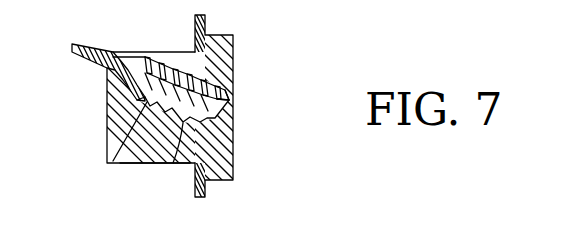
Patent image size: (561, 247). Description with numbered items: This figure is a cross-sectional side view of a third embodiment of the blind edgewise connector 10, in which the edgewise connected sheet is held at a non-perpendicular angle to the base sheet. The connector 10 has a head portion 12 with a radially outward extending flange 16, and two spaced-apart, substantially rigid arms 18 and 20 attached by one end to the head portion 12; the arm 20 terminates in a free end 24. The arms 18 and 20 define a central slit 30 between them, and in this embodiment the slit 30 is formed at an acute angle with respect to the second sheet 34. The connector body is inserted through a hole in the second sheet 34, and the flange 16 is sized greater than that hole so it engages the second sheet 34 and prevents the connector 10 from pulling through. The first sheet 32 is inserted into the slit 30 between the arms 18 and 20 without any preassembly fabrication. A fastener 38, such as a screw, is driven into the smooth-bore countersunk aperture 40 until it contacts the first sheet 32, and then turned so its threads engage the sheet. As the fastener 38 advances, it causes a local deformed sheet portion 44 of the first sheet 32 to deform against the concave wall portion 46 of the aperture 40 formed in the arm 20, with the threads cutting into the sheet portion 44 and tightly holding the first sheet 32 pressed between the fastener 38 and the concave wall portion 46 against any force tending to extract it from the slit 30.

The edgewise connector 10 is at (80, 118).
The head portion 12 is at (216, 107).
The flange 16 is at (233, 38).
The arm 18 is at (205, 66).
The arm 20 is at (113, 125).
The free end 24 is at (157, 163).
The slit 30 is at (106, 60).
The first sheet 32 is at (86, 46).
The second sheet 34 is at (200, 21).
The fastener 38 is at (230, 97).
The countersunk aperture 40 is at (133, 54).
The deformed sheet portion 44 is at (173, 163).
The concave wall portion 46 is at (113, 161).